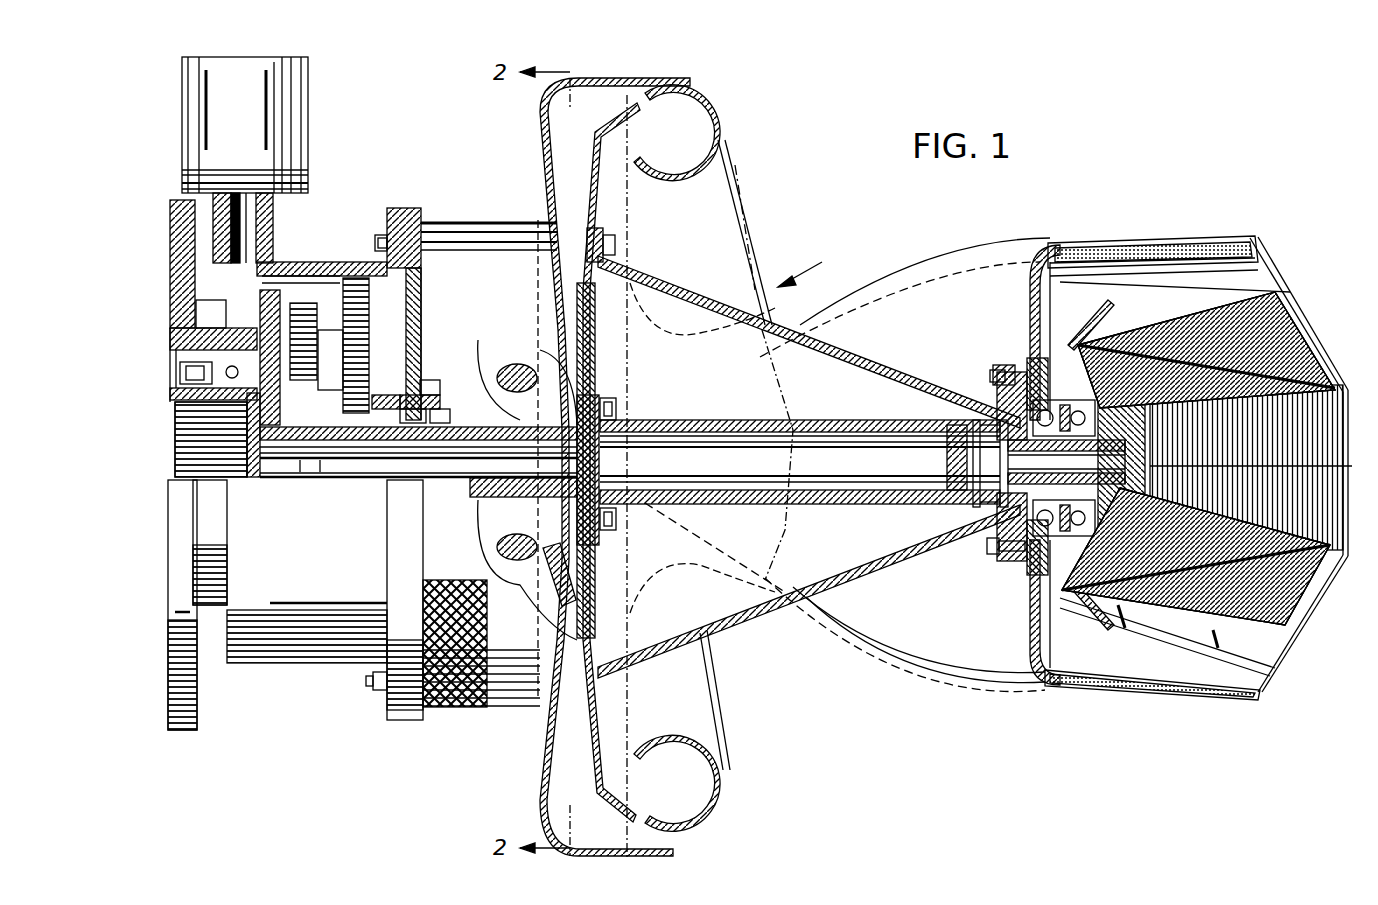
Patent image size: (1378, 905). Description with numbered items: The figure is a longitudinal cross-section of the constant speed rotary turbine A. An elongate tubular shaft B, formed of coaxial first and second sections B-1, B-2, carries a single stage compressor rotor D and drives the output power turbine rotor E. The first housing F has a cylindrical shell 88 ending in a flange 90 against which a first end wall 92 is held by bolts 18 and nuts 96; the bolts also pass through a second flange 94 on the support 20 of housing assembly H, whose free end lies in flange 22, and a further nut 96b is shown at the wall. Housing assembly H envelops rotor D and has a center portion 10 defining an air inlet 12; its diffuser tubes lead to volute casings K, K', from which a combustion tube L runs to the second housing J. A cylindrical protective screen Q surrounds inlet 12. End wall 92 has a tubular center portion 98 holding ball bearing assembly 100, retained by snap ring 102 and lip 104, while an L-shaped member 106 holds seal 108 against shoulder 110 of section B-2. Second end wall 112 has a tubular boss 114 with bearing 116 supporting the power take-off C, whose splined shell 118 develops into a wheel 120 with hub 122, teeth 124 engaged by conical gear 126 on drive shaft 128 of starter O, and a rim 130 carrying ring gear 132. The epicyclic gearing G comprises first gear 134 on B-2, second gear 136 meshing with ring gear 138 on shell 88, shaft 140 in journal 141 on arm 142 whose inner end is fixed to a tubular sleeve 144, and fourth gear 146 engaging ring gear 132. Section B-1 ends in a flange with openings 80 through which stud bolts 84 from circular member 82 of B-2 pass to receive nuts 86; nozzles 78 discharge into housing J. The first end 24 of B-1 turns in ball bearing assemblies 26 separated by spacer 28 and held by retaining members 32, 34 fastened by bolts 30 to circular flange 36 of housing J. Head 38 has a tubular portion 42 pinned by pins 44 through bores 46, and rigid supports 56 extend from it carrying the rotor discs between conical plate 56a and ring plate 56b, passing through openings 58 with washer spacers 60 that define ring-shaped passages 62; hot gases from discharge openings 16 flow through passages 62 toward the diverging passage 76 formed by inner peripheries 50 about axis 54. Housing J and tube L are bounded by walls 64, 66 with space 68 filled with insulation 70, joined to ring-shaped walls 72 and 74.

The power operated starter O is at (244, 123).
The second end wall 112 is at (168, 220).
The drive shaft 128 is at (273, 212).
The first housing F is at (290, 262).
The cylindrical shell 88 is at (318, 262).
The circular rim 130 is at (301, 261).
The ring gear 132 is at (310, 265).
The nuts 96 is at (376, 238).
The outwardly directed flange 90 is at (400, 210).
The first end wall 92 is at (422, 283).
The bolts 18 is at (490, 253).
The shaft 140 is at (260, 320).
The journal 141 is at (324, 341).
The third gear 138 is at (373, 345).
The second gear 136 is at (360, 345).
The speed reducing gears G is at (408, 318).
The snap ring 102 is at (386, 395).
The tubular center portion 98 is at (425, 365).
The circular member 106 is at (434, 378).
The ball bearing assembly 100 is at (425, 395).
The circular lip 104 is at (440, 410).
The tubular boss 114 is at (172, 330).
The teeth 124 is at (172, 312).
The conical gear 126 is at (196, 310).
The ball bearing assembly 116 is at (180, 372).
The rotary power take-off C is at (172, 405).
The internally splined cylindrical shell 118 is at (175, 430).
The wheel 120 is at (175, 450).
The fourth gear 146 is at (254, 477).
The first gear 134 is at (335, 474).
The arm 142 is at (298, 474).
The shaft bearing 144 is at (318, 478).
The hub 122 is at (275, 478).
The second tubular shaft section B-2 is at (352, 478).
The seal 108 is at (412, 478).
The circular shoulder 110 is at (465, 478).
The center portion 10 is at (510, 362).
The air inlet 12 is at (490, 395).
The cylindrical protective screen Q is at (455, 708).
The housing assembly H is at (542, 172).
The first volute casing K is at (703, 205).
The second volute casing K' is at (707, 730).
The second flange 94 is at (597, 300).
The fastening bolt 96b is at (607, 236).
The support 20 is at (845, 346).
The nuts 86 is at (625, 442).
The single stage compressor rotor D is at (603, 378).
The circular member 82 is at (600, 395).
The nozzles 78 is at (605, 402).
The openings 80 is at (610, 415).
The stud bolts 84 is at (634, 414).
The retaining member 34 is at (615, 528).
The elongate shaft B is at (728, 420).
The first tubular shaft section B-1 is at (840, 505).
The constant speed rotary turbine A is at (806, 271).
The first combustion tube L is at (852, 300).
The flange 22 is at (990, 368).
The spacer 28 is at (990, 376).
The bolts 30 is at (998, 375).
The retaining member 32 is at (1028, 362).
The circular flange 36 is at (1045, 340).
The ring-shaped wall 72 is at (1030, 312).
The second housing J is at (1000, 313).
The ball bearing assemblies 26 is at (975, 425).
The bores 46 is at (950, 430).
The pins 44 is at (985, 510).
The first end 24 is at (1066, 462).
The tubular portion 42 is at (1065, 456).
The head 38 is at (1120, 443).
The washer shaped spacers 60 is at (1120, 340).
The output power turbine rotor E is at (1292, 290).
The space 68 is at (1080, 242).
The second wall 66 is at (1112, 242).
The first wall 64 is at (1150, 242).
The heat insulating material 70 is at (1190, 244).
The ring-shaped wall 74 is at (1272, 270).
The outer ring-shaped plate 56b is at (1187, 282).
The conical plate 56a is at (1085, 340).
The openings 58 is at (1295, 305).
The rigid supports 56 is at (1297, 322).
The inner peripheries 50 is at (1305, 340).
The axis of rotation 54 is at (1251, 467).
The discharge openings 16 is at (1175, 301).
The ring-shaped passages 62 is at (1210, 340).
The longitudinally divergent passage 76 is at (1310, 570).